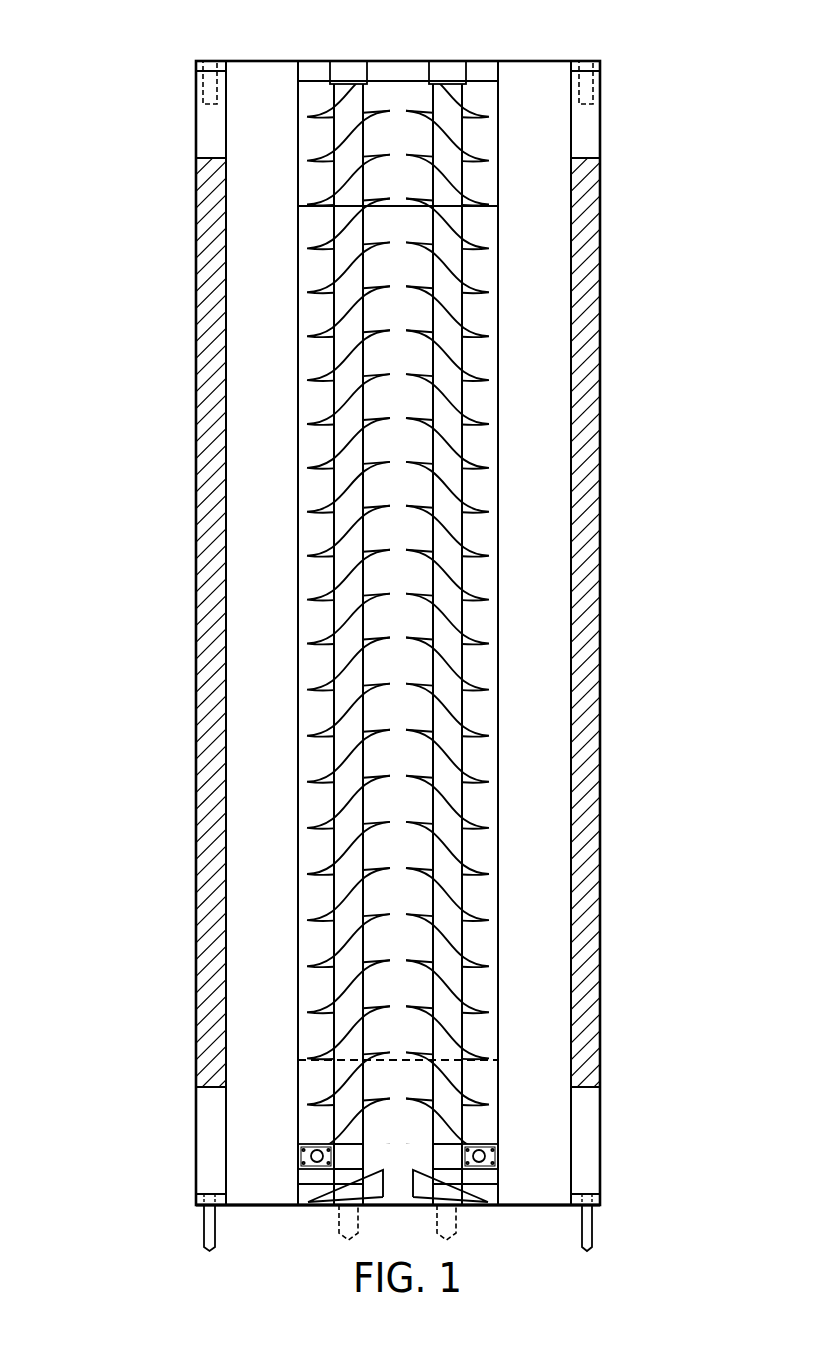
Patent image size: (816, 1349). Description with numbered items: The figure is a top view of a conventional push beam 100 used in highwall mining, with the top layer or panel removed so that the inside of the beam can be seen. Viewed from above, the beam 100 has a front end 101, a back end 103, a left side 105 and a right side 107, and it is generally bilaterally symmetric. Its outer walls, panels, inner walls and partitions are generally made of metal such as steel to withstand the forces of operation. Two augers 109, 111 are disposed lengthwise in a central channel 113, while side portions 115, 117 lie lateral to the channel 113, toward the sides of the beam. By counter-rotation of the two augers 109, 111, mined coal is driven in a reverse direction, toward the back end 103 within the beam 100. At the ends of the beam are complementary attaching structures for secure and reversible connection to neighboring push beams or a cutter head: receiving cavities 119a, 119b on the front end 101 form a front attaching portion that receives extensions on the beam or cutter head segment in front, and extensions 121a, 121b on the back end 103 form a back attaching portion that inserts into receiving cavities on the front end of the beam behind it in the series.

The beam 100 is at (58, 182).
The front end 101 is at (512, 62).
The back end 103 is at (533, 1207).
The left side 105 is at (196, 305).
The right side 107 is at (602, 495).
The auger 109 is at (347, 471).
The auger 111 is at (450, 301).
The central channel 113 is at (487, 615).
The side portion 115 is at (207, 918).
The side portion 117 is at (590, 918).
The receiving cavity 119a is at (203, 83).
The receiving cavity 119b is at (593, 83).
The extension 121a is at (207, 1223).
The extension 121b is at (590, 1223).